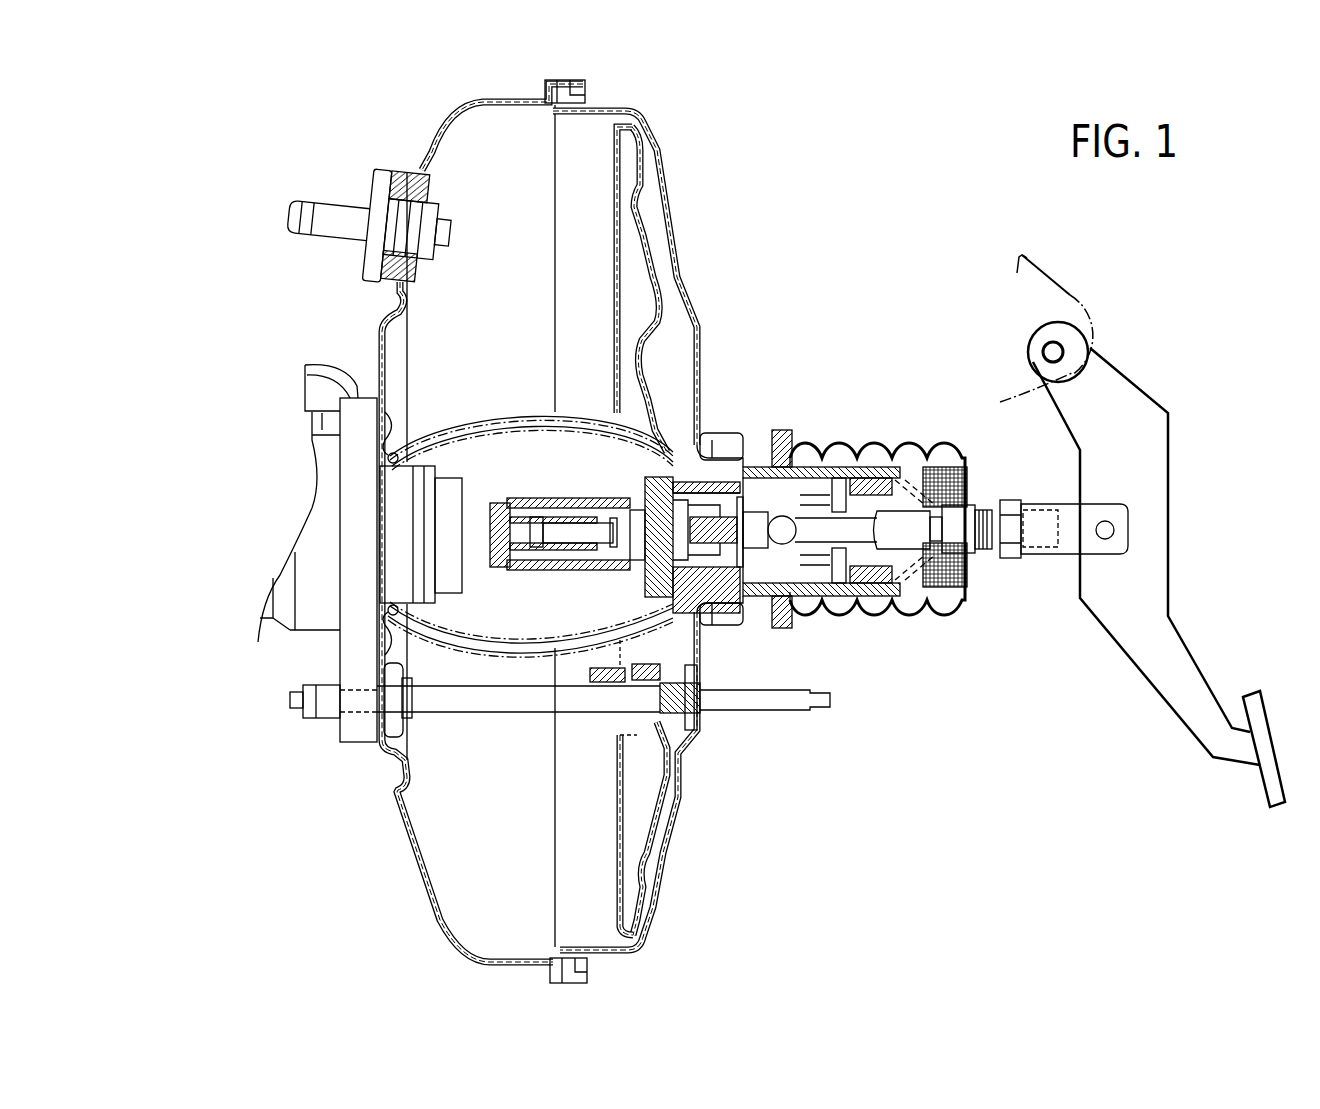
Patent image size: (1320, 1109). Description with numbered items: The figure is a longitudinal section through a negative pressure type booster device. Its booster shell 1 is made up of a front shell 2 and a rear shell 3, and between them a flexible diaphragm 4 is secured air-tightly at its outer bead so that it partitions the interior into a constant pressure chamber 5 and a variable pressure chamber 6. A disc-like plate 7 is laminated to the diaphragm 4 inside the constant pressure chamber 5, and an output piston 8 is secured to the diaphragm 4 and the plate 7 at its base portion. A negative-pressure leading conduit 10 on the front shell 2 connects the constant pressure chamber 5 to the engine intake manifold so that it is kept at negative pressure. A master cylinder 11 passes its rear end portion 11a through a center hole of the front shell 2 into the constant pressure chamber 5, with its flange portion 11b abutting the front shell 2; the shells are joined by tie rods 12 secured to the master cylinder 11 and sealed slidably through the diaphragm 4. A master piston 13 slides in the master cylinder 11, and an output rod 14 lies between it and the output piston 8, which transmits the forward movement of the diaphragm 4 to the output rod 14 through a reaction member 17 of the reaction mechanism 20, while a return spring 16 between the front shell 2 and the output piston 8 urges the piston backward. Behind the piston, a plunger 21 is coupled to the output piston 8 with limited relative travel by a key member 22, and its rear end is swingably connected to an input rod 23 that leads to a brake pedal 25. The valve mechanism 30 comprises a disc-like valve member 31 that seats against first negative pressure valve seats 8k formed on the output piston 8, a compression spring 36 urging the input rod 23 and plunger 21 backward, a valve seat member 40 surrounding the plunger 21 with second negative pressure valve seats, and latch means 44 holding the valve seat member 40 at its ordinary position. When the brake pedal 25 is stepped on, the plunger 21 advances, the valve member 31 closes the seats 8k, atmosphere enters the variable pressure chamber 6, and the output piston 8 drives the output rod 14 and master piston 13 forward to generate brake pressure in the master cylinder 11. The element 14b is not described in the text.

The booster shell 1 is at (693, 244).
The front shell 2 is at (420, 155).
The rear shell 3 is at (655, 140).
The diaphragm 4 is at (647, 163).
The constant pressure chamber 5 is at (500, 160).
The variable pressure chamber 6 is at (660, 330).
The plate 7 is at (643, 132).
The output piston 8 is at (853, 467).
The first negative pressure valve seats 8k is at (808, 470).
The negative-pressure leading conduit 10 is at (333, 223).
The master cylinder 11 is at (357, 616).
The rear end portion 11a is at (418, 500).
The flange portion 11b is at (343, 640).
The tie rods 12 is at (472, 705).
The master piston 13 is at (485, 515).
The output rod 14 is at (583, 517).
The lower piston plate 14b is at (597, 630).
The return spring 16 is at (665, 420).
The reaction member 17 is at (640, 578).
The reaction mechanism 20 is at (640, 455).
The plunger 21 is at (740, 575).
The key member 22 is at (748, 600).
The input rod 23 is at (960, 533).
The brake pedal 25 is at (1134, 655).
The valve mechanism 30 is at (863, 613).
The valve member 31 is at (843, 590).
The compression spring 36 is at (900, 465).
The valve seat member 40 is at (812, 580).
The latch means 44 is at (742, 450).